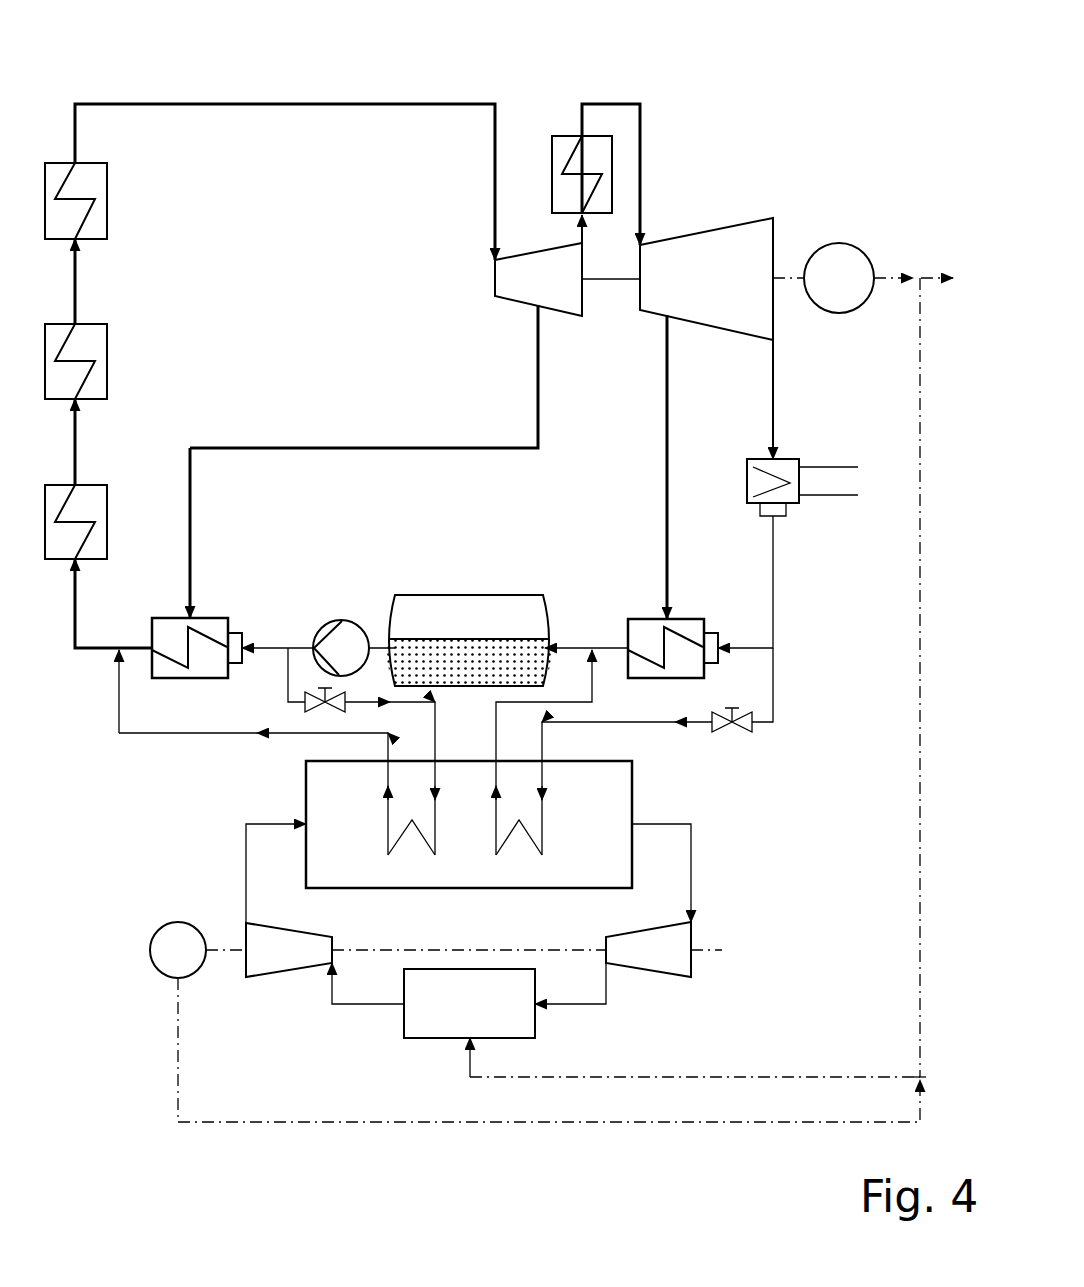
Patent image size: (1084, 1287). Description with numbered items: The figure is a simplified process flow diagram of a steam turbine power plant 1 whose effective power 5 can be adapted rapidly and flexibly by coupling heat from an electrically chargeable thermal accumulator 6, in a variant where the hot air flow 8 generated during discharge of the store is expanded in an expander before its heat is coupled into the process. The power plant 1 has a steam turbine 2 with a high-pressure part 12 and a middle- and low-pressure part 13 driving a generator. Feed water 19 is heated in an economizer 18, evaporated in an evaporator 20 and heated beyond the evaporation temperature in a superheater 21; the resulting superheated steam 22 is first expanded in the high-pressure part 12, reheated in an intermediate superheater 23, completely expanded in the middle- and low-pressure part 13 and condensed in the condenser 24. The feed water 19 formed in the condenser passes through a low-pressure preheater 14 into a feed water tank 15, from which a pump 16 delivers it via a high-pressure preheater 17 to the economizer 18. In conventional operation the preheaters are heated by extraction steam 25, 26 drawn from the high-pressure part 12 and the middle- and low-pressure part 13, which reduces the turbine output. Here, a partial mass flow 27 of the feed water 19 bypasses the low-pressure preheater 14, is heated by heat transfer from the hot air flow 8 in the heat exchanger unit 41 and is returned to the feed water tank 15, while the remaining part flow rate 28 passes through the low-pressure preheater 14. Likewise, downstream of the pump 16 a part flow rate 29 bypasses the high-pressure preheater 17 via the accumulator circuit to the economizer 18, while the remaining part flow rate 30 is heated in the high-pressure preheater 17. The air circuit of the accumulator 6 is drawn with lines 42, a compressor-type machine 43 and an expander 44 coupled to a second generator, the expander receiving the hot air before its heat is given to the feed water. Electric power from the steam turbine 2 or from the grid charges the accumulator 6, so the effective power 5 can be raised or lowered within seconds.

The steam turbine power plant 1 is at (797, 70).
The steam turbine 2 is at (613, 332).
The effective power 5 is at (930, 278).
The thermal accumulator 6 is at (435, 1040).
The hot air flow 8 is at (246, 893).
The high-pressure part 12 is at (522, 268).
The middle- and low-pressure part 13 is at (698, 268).
The low-pressure preheater 14 is at (692, 630).
The feed water tank 15 is at (497, 605).
The pump 16 is at (341, 630).
The high-pressure preheater 17 is at (220, 625).
The economizer 18 is at (100, 537).
The feed water 19 is at (77, 447).
The evaporator 20 is at (100, 379).
The superheater 21 is at (100, 217).
The superheated steam 22 is at (283, 104).
The intermediate superheater 23 is at (561, 146).
The condenser 24 is at (752, 462).
The extraction steam 25 is at (538, 400).
The extraction steam 26 is at (667, 543).
The partial mass flow 27 is at (778, 698).
The remaining part flow rate 28 is at (742, 640).
The part flow rate 29 is at (119, 700).
The remaining part flow rate 30 is at (288, 640).
The thermal storage heat exchanger unit 41 is at (320, 785).
The secondary fluid line 42 is at (668, 824).
The compressor 43 is at (665, 957).
The expander turbine 44 is at (272, 957).